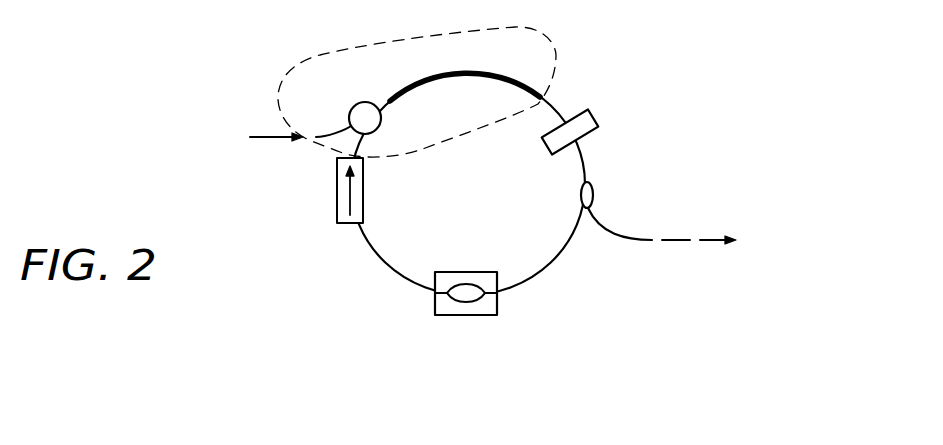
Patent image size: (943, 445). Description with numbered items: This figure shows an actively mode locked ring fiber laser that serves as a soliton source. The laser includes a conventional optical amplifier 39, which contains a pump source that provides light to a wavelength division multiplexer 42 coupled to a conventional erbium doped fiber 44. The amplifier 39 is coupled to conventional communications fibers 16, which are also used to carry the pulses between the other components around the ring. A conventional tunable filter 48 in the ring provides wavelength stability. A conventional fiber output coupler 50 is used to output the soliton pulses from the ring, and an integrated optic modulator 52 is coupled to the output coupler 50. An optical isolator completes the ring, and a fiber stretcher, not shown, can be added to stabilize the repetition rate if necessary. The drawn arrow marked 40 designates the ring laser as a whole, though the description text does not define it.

The communications fibers 16 is at (385, 112).
The optical amplifier 39 is at (560, 67).
The fiber ring laser 40 is at (541, 200).
The wavelength division multiplexer 42 is at (366, 102).
The erbium doped fiber 44 is at (455, 72).
The tunable filter 48 is at (599, 137).
The fiber output coupler 50 is at (593, 195).
The integrated optic modulator 52 is at (497, 303).